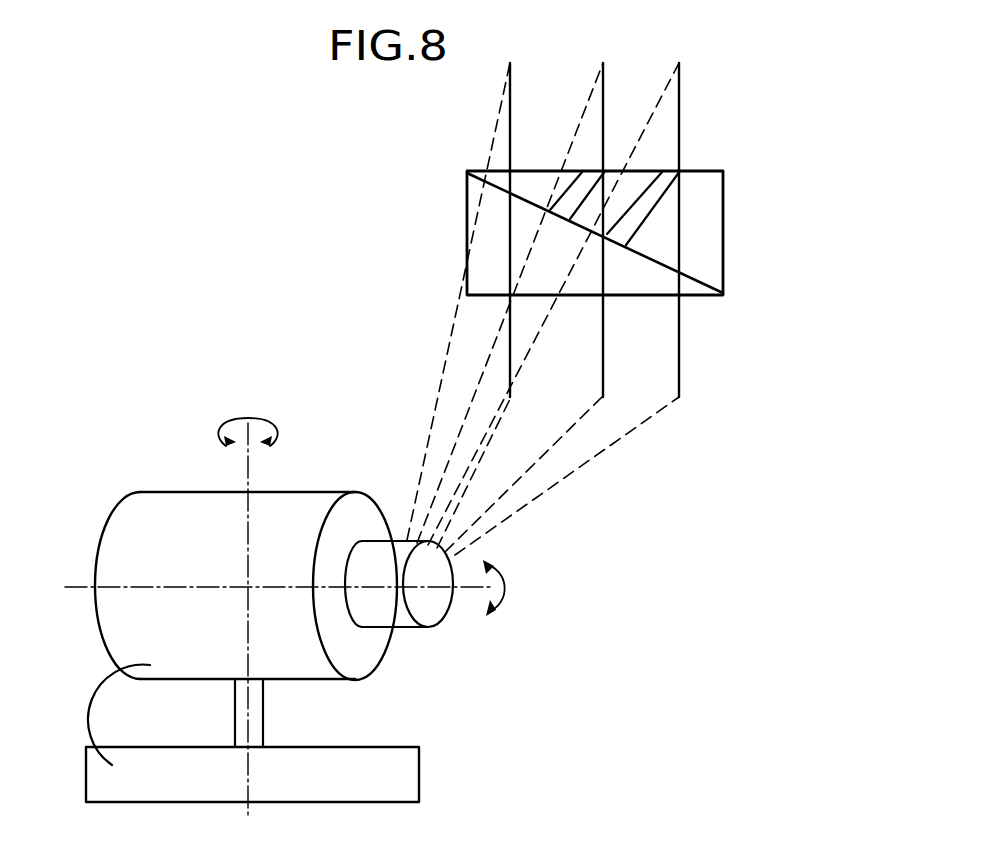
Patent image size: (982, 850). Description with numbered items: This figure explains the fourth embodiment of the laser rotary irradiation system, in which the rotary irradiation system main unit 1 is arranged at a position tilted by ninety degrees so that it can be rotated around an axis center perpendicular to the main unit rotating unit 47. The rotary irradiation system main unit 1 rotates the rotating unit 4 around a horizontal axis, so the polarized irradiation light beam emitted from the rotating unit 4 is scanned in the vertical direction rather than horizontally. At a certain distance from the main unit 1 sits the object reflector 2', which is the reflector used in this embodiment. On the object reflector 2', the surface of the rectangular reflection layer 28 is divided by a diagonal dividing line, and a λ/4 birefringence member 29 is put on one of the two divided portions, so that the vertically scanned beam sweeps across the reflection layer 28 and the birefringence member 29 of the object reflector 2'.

The rotary irradiation system main unit 1 is at (322, 468).
The rotating unit 4 is at (428, 607).
The main unit rotating unit 47 is at (400, 773).
The object reflector 2' is at (636, 230).
The rectangular reflection layer 28 is at (490, 247).
The λ/4 birefringence member 29 is at (708, 260).